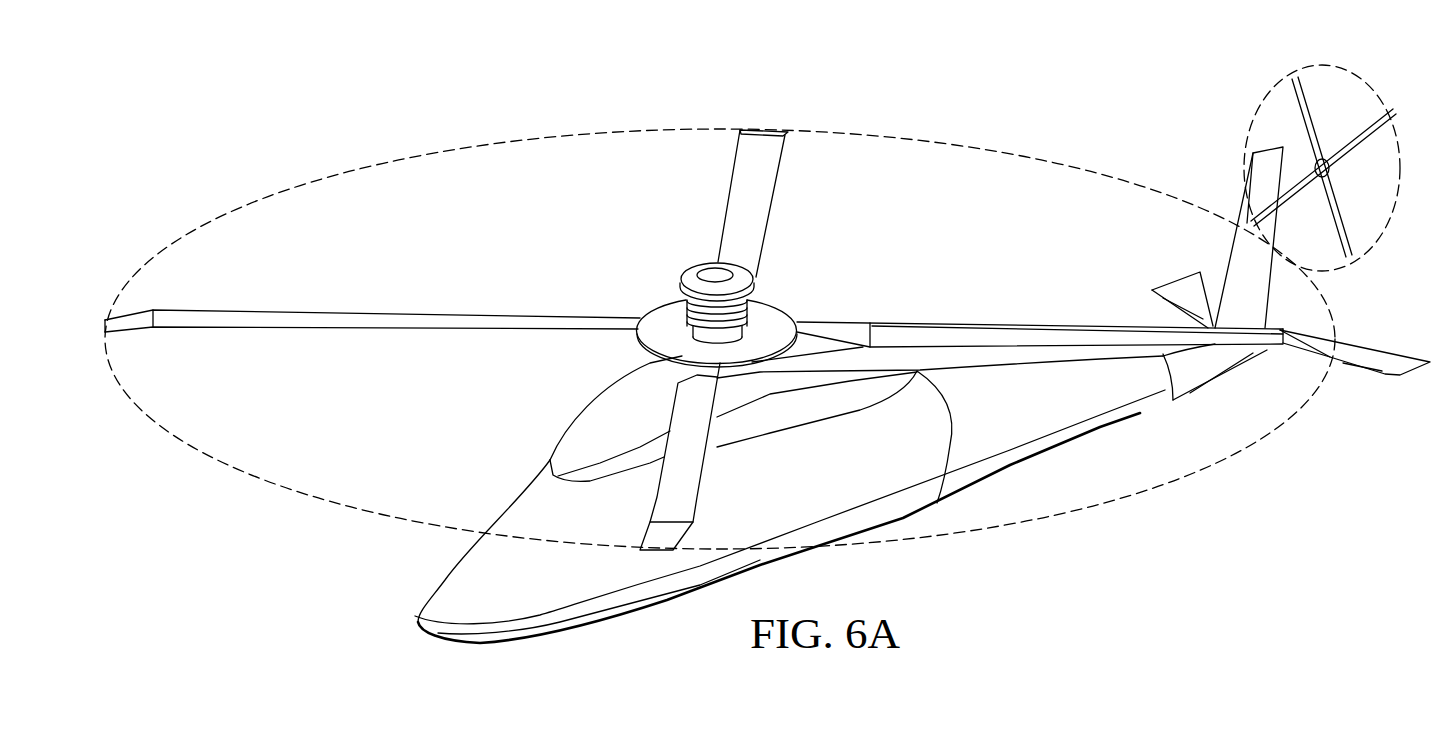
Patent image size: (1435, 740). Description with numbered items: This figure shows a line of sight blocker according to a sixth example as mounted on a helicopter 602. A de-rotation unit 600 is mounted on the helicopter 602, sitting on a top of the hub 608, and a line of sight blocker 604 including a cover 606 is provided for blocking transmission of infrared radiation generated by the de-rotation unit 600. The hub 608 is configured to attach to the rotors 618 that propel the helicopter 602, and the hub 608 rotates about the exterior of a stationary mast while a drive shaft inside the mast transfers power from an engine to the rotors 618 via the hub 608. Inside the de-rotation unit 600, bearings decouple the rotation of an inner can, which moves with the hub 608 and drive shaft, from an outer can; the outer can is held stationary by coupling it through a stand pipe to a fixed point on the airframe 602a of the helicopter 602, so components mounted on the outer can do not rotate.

The de-rotation unit 600 is at (769, 282).
The helicopter 602 is at (950, 109).
The airframe 602a is at (415, 610).
The line of sight blocker 604 is at (687, 259).
The cover 606 is at (682, 290).
The hub 608 is at (663, 337).
The rotors 618 is at (392, 315).